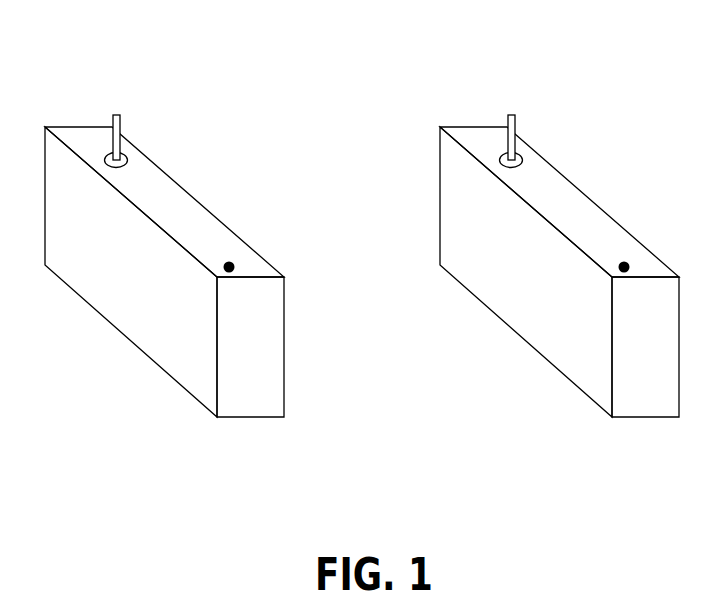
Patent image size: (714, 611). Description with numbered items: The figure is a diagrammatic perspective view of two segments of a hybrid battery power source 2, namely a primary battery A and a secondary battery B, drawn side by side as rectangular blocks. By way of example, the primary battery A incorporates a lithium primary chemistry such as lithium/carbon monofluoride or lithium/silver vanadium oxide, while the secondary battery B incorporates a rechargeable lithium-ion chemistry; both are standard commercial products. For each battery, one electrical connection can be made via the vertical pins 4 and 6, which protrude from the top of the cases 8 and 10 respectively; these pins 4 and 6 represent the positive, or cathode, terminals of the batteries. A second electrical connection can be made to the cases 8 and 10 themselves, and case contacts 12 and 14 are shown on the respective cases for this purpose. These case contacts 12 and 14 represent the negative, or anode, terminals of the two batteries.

The hybrid battery power source 2 is at (278, 96).
The vertical pin 4 is at (112, 125).
The vertical pin 6 is at (507, 125).
The case 8 is at (166, 262).
The case 10 is at (561, 262).
The case contact 12 is at (233, 257).
The case contact 14 is at (628, 257).